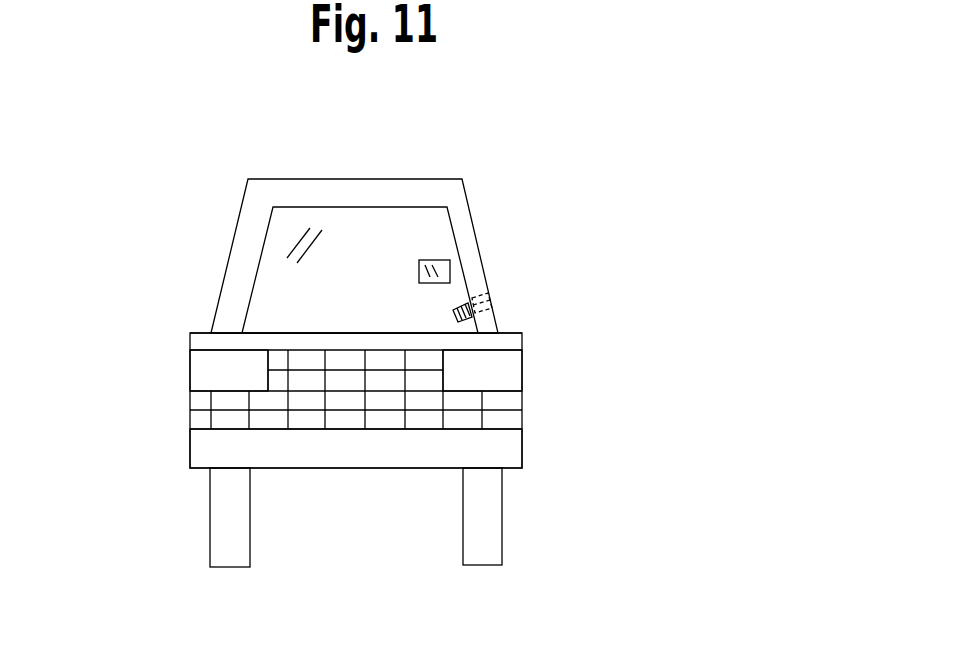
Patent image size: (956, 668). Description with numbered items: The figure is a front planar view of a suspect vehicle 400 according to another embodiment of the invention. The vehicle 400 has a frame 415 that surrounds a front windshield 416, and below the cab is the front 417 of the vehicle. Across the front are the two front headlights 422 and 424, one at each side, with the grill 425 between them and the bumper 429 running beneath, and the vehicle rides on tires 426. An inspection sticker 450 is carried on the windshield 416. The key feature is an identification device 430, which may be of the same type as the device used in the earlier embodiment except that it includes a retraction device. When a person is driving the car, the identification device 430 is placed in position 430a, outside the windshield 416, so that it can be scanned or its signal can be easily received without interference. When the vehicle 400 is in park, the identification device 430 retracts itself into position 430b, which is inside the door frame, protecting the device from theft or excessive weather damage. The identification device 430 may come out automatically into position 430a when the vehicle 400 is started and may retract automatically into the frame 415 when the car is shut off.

The suspect vehicle 400 is at (480, 127).
The frame 415 is at (242, 267).
The front windshield 416 is at (348, 230).
The front 417 is at (317, 335).
The inspection sticker 450 is at (447, 267).
The identification device 430 is at (468, 303).
The position outside the windshield 430a is at (455, 312).
The retracted position inside the door frame 430b is at (485, 302).
The front headlight 422 is at (212, 383).
The front headlight 424 is at (512, 368).
The grill 425 is at (385, 418).
The bumper 429 is at (317, 455).
The tire 426 is at (487, 557).